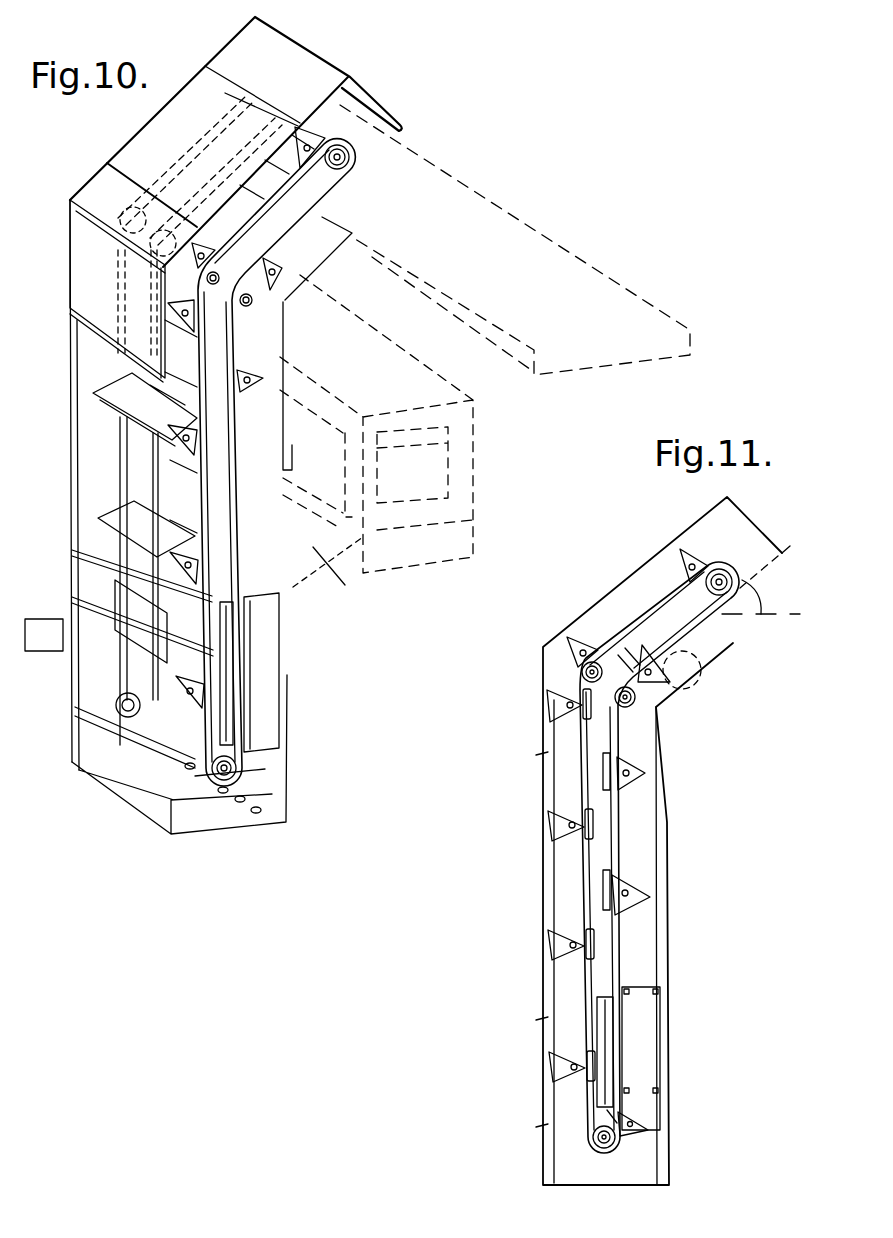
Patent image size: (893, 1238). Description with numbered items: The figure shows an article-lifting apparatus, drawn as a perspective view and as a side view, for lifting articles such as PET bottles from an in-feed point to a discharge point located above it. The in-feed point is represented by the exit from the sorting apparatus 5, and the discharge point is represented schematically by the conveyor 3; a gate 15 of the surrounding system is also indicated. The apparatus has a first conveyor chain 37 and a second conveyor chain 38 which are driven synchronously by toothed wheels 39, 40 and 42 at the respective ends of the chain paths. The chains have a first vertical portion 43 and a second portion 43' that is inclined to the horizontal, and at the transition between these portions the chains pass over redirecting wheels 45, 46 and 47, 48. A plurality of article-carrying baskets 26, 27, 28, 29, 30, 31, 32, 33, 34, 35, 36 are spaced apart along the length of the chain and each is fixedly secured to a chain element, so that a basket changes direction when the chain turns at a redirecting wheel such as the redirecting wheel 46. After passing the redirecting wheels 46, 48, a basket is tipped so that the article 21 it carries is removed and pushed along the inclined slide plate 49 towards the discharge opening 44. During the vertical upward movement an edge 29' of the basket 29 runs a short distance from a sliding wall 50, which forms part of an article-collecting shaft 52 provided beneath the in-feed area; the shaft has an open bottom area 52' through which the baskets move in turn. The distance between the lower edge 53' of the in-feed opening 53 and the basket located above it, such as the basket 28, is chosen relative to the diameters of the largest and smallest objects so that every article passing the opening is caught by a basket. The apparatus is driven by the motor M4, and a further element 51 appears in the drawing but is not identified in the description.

In FIG. 10, the conveyor 3 is at (495, 215).
In FIG. 10, the sorting apparatus 5 is at (457, 470).
In FIG. 10, the gate 15 is at (297, 472).
In FIG. 11, the article 21 is at (698, 690).
In FIG. 11, the article-carrying basket 26 is at (643, 653).
In FIG. 11, the article-carrying basket 27 is at (630, 762).
In FIG. 11, the article-carrying basket 28 is at (633, 893).
In FIG. 11, the article-carrying basket 29 is at (669, 1005).
In FIG. 11, the edge of basket 29' is at (670, 1045).
In FIG. 11, the article-carrying basket 30 is at (620, 1130).
In FIG. 11, the article-carrying basket 31 is at (583, 1067).
In FIG. 11, the article-carrying basket 32 is at (582, 945).
In FIG. 11, the article-carrying basket 33 is at (582, 826).
In FIG. 11, the article-carrying basket 34 is at (580, 704).
In FIG. 11, the article-carrying basket 35 is at (578, 640).
In FIG. 11, the article-carrying basket 36 is at (690, 556).
In FIG. 10, the first conveyor chain 37 is at (212, 548).
In FIG. 10, the second conveyor chain 38 is at (120, 453).
In FIG. 10, the toothed wheel 39 is at (245, 775).
In FIG. 11, the toothed wheel 39 is at (590, 1143).
In FIG. 10, the toothed wheel 40 is at (352, 159).
In FIG. 11, the toothed wheel 40 is at (733, 575).
In FIG. 10, the toothed wheel 42 is at (224, 46).
In FIG. 11, the first vertical portion 43 is at (614, 857).
In FIG. 11, the second portion 43' is at (621, 565).
In FIG. 10, the discharge opening 44 is at (362, 178).
In FIG. 11, the discharge opening 44 is at (740, 633).
In FIG. 11, the redirecting wheel 45 is at (582, 672).
In FIG. 11, the redirecting wheel 46 is at (636, 704).
In FIG. 10, the redirecting wheel 47 is at (101, 172).
In FIG. 10, the redirecting wheel 48 is at (133, 280).
In FIG. 10, the inclined slide plate 49 is at (313, 250).
In FIG. 11, the inclined slide plate 49 is at (722, 652).
In FIG. 10, the sliding wall 50 is at (222, 543).
In FIG. 11, the sliding wall 50 is at (657, 1003).
In FIG. 10, the hidden joint 51 is at (340, 585).
In FIG. 10, the article-collecting shaft 52 is at (293, 672).
In FIG. 11, the bottom area of shaft 52' is at (671, 1077).
In FIG. 11, the in-feed opening 53 is at (663, 841).
In FIG. 11, the lower edge of in-feed opening 53' is at (697, 946).
In FIG. 10, the motor M4 is at (44, 635).